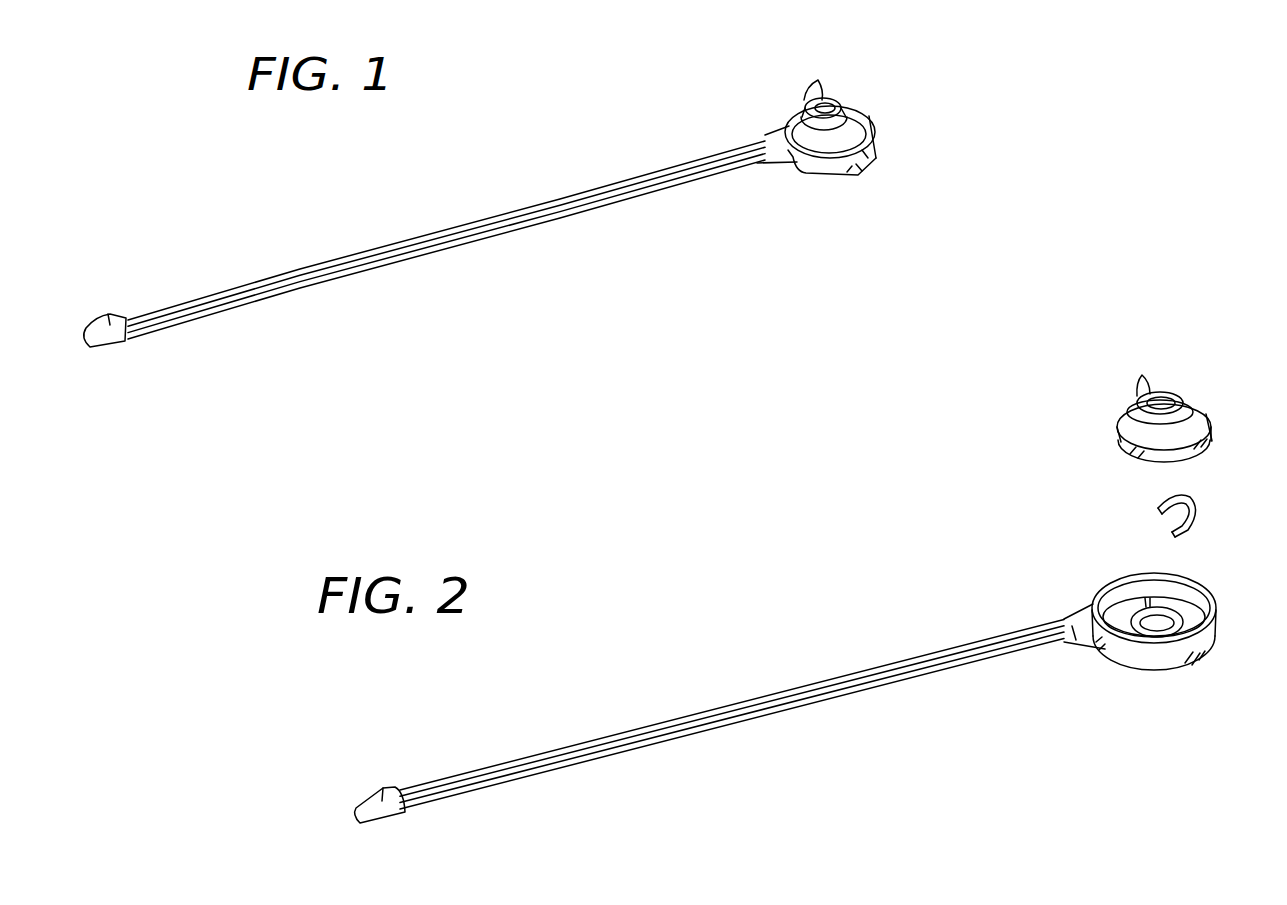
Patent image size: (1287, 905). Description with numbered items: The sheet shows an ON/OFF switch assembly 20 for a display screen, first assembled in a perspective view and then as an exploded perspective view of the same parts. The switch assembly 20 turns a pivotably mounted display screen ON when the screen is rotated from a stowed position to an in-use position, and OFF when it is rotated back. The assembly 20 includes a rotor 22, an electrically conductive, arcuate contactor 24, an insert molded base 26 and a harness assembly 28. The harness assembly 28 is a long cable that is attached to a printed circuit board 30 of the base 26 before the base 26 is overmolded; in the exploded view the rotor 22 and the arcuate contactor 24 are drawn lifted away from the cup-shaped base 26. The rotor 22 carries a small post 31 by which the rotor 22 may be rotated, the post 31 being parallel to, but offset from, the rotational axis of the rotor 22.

In FIG. 1, the ON/OFF switch assembly 20 is at (1012, 212).
In FIG. 2, the ON/OFF switch assembly 20 is at (797, 472).
In FIG. 2, the rotor 22 is at (1120, 425).
In FIG. 2, the arcuate contactor 24 is at (1157, 507).
In FIG. 2, the insert molded base 26 is at (1157, 660).
In FIG. 2, the harness assembly 28 is at (655, 742).
In FIG. 2, the printed circuit board 30 is at (1112, 653).
In FIG. 1, the post 31 is at (812, 90).
In FIG. 2, the post 31 is at (1140, 376).